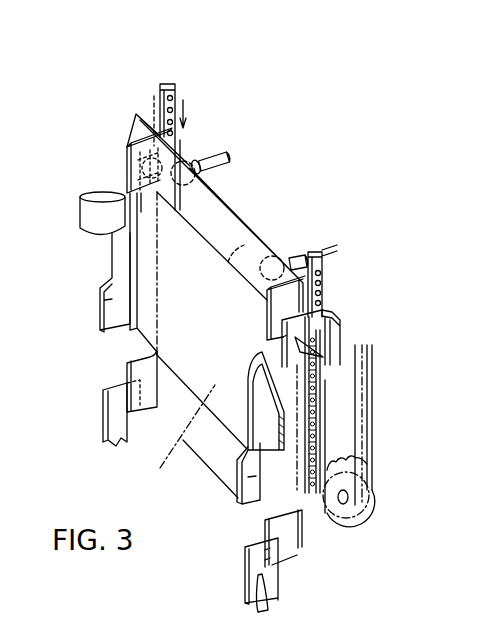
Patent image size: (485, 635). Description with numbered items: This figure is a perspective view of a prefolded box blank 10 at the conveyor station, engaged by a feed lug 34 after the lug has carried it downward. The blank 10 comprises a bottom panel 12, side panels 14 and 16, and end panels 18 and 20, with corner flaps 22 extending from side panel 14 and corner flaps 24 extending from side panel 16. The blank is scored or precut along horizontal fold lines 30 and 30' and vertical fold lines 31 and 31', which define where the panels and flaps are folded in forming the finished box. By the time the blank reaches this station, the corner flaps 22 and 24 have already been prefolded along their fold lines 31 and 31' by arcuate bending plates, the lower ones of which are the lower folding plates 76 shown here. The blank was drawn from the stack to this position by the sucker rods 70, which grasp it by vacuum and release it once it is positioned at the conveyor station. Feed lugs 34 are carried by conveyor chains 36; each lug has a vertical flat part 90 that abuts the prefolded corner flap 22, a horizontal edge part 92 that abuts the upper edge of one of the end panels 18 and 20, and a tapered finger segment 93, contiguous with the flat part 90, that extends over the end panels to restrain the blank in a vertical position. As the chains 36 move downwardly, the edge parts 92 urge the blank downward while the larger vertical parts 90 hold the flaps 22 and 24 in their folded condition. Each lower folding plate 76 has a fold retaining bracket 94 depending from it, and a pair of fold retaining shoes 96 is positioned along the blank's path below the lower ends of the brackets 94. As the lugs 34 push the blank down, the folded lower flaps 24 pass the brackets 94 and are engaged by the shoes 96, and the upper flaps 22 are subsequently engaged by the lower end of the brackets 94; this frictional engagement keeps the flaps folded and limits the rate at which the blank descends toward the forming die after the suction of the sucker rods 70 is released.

The blank 10 is at (242, 186).
The bottom panel 12 is at (207, 278).
The side panel 14 is at (266, 252).
The side panel 16 is at (208, 452).
The end panel 18 is at (140, 337).
The end panel 20 is at (302, 452).
The corner flap 22 is at (132, 156).
The corner flap 24 is at (147, 405).
The horizontal fold line 30 is at (221, 216).
The horizontal fold line 30' is at (176, 431).
The vertical fold line 31 is at (342, 425).
The vertical fold line 31' is at (176, 273).
The feed lug 34 is at (135, 143).
The conveyor chain 36 is at (165, 105).
The sucker rod 70 is at (193, 162).
The lower folding plate 76 is at (93, 210).
The vertical flat part 90 is at (283, 338).
The horizontal edge part 92 is at (192, 152).
The tapered finger segment 93 is at (131, 240).
The fold retaining bracket 94 is at (110, 316).
The fold retaining shoe 96 is at (117, 426).